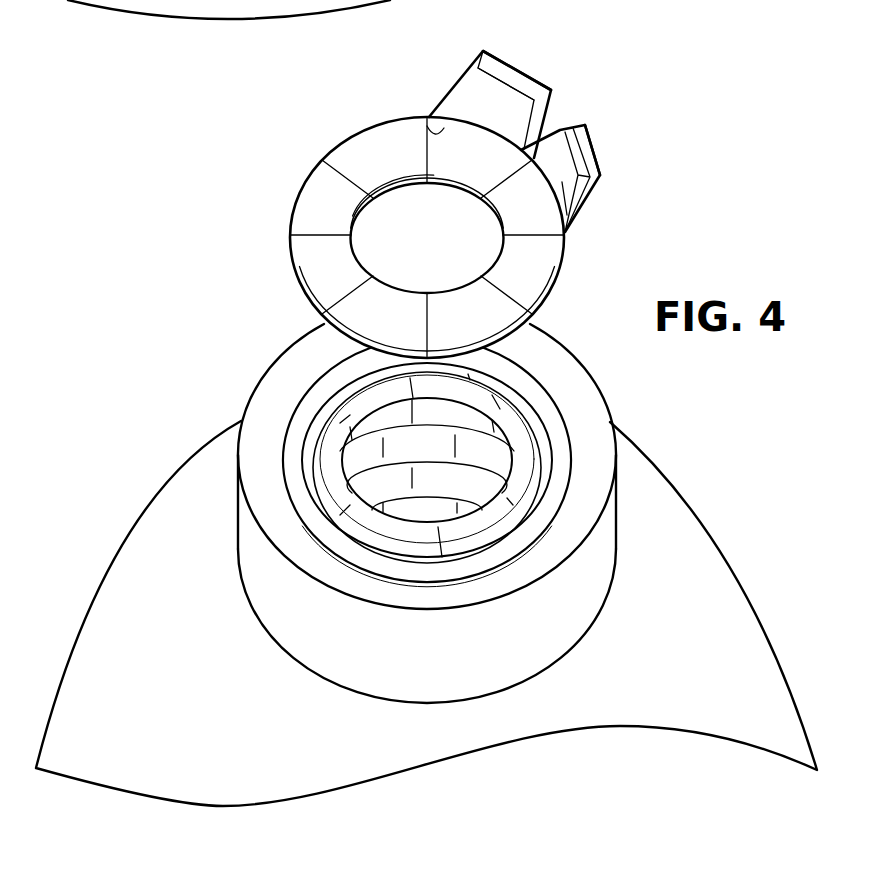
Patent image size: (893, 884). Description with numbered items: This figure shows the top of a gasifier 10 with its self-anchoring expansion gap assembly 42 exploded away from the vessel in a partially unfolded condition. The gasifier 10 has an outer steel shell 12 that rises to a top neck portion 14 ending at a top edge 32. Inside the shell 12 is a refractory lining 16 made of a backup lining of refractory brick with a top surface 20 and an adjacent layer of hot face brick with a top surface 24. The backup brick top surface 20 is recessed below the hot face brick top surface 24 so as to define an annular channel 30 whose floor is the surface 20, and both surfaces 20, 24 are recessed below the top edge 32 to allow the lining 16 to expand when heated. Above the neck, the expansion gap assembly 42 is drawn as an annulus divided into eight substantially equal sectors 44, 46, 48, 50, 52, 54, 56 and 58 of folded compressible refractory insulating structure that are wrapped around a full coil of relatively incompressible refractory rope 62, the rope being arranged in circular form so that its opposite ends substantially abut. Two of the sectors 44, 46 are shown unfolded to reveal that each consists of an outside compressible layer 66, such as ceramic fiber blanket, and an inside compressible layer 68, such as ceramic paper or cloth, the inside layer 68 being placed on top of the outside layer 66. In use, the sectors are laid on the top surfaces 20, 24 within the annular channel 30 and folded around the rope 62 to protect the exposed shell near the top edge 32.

The gasifier 10 is at (141, 350).
The shell 12 is at (132, 573).
The top neck portion 14 is at (608, 556).
The refractory lining 16 is at (404, 460).
The top surface of backup brick 20 is at (304, 478).
The top surface of hot face brick 24 is at (525, 450).
The annular channel 30 is at (311, 447).
The top edge 32 is at (314, 400).
The expansion gap assembly 42 is at (298, 192).
The sector 44 is at (528, 64).
The sector 46 is at (598, 135).
The sector 48 is at (503, 284).
The sector 50 is at (448, 334).
The sector 52 is at (371, 334).
The sector 54 is at (314, 284).
The sector 56 is at (314, 217).
The sector 58 is at (375, 169).
The refractory rope 62 is at (424, 126).
The outside compressible layer 66 is at (484, 50).
The inside compressible layer 68 is at (478, 108).